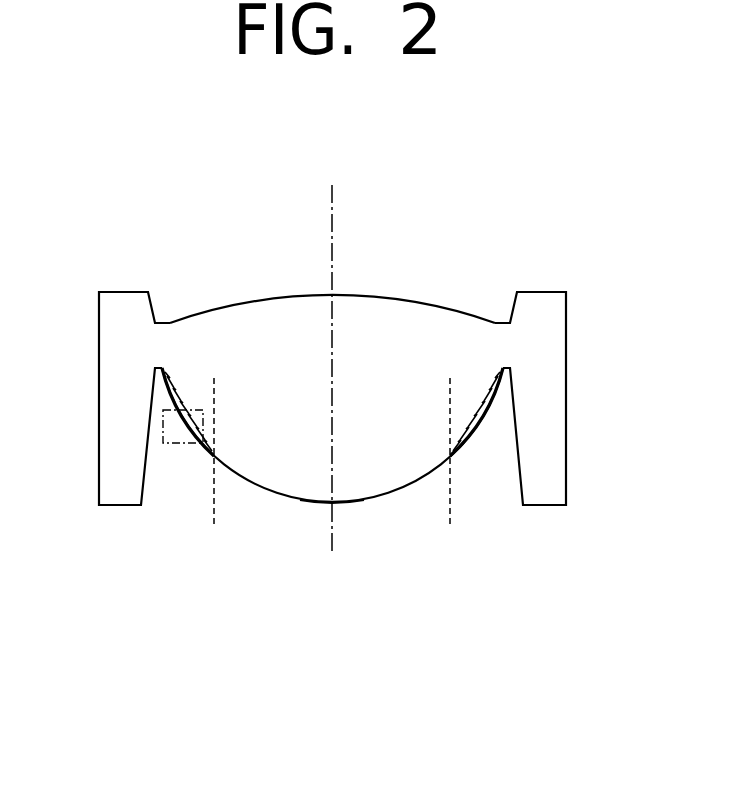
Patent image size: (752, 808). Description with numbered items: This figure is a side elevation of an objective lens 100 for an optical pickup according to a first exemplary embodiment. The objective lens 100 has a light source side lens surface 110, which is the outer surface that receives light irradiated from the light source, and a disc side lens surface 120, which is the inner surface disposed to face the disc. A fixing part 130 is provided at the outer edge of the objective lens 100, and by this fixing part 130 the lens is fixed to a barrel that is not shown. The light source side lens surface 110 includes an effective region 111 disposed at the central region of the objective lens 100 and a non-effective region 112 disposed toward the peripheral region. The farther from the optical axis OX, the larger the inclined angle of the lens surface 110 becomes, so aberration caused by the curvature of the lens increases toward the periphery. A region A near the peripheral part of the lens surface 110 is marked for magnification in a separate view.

The objective lens 100 is at (271, 132).
The light source side lens surface 110 is at (393, 495).
The effective region 111 is at (357, 503).
The non-effective region 112 is at (205, 450).
The disc side lens surface 120 is at (413, 300).
The fixing part 130 is at (103, 402).
The optical axis OX is at (332, 203).
The region A is at (187, 410).